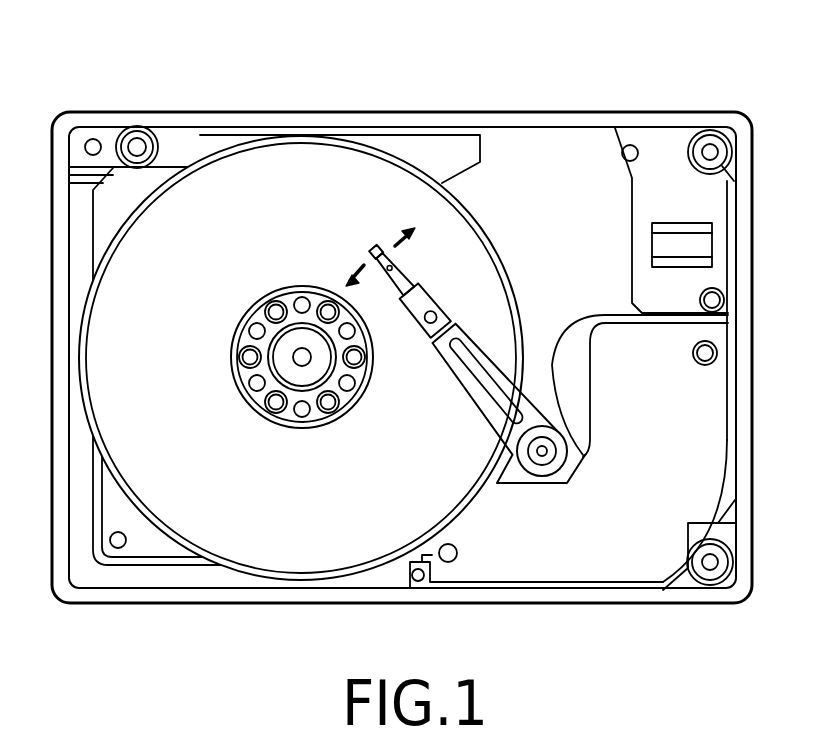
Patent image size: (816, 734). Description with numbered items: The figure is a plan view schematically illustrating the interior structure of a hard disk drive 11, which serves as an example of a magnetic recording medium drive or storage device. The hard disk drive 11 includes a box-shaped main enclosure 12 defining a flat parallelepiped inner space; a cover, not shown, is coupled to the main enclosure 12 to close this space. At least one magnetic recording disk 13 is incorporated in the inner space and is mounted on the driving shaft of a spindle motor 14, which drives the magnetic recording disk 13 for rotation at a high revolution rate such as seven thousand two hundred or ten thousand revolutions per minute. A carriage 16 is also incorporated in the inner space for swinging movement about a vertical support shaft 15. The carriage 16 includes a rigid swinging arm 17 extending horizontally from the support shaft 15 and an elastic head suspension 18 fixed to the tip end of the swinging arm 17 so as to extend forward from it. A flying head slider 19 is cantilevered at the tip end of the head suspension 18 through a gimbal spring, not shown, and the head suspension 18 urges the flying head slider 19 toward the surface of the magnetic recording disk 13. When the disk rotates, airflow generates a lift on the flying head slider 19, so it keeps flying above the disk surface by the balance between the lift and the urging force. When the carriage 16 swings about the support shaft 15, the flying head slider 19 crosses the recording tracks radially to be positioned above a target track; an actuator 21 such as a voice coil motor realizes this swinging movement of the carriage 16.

The hard disk drive 11 is at (445, 106).
The main enclosure 12 is at (300, 603).
The magnetic recording disk 13 is at (498, 258).
The spindle motor 14 is at (278, 367).
The vertical support shaft 15 is at (548, 458).
The carriage 16 is at (458, 384).
The swinging arm 17 is at (474, 402).
The head suspension 18 is at (408, 277).
The flying head slider 19 is at (369, 250).
The actuator 21 is at (640, 563).